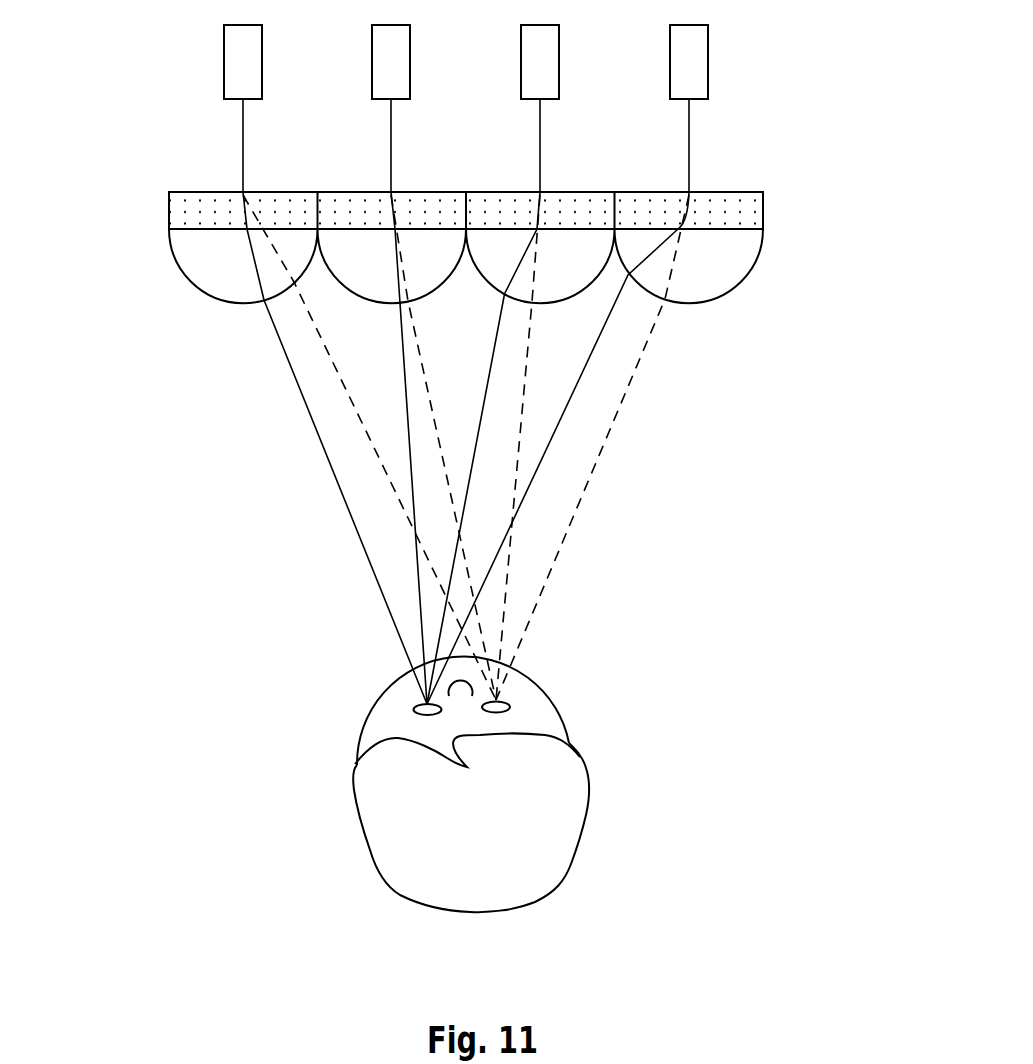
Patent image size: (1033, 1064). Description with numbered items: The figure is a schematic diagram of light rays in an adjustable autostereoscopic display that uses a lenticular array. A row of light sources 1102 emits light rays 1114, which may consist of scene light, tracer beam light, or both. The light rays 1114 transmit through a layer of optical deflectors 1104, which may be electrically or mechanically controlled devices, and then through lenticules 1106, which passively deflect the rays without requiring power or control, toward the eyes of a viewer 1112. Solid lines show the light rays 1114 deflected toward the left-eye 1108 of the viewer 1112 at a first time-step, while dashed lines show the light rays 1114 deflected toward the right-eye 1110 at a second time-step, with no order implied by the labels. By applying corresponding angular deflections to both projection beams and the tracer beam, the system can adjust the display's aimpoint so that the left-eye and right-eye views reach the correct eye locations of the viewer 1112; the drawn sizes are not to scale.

The light sources 1102 is at (190, 57).
The optical deflectors 1104 is at (784, 216).
The lenticules 1106 is at (779, 284).
The left-eye 1108 is at (400, 697).
The right-eye 1110 is at (530, 688).
The viewer 1112 is at (586, 768).
The light rays 1114 is at (290, 424).